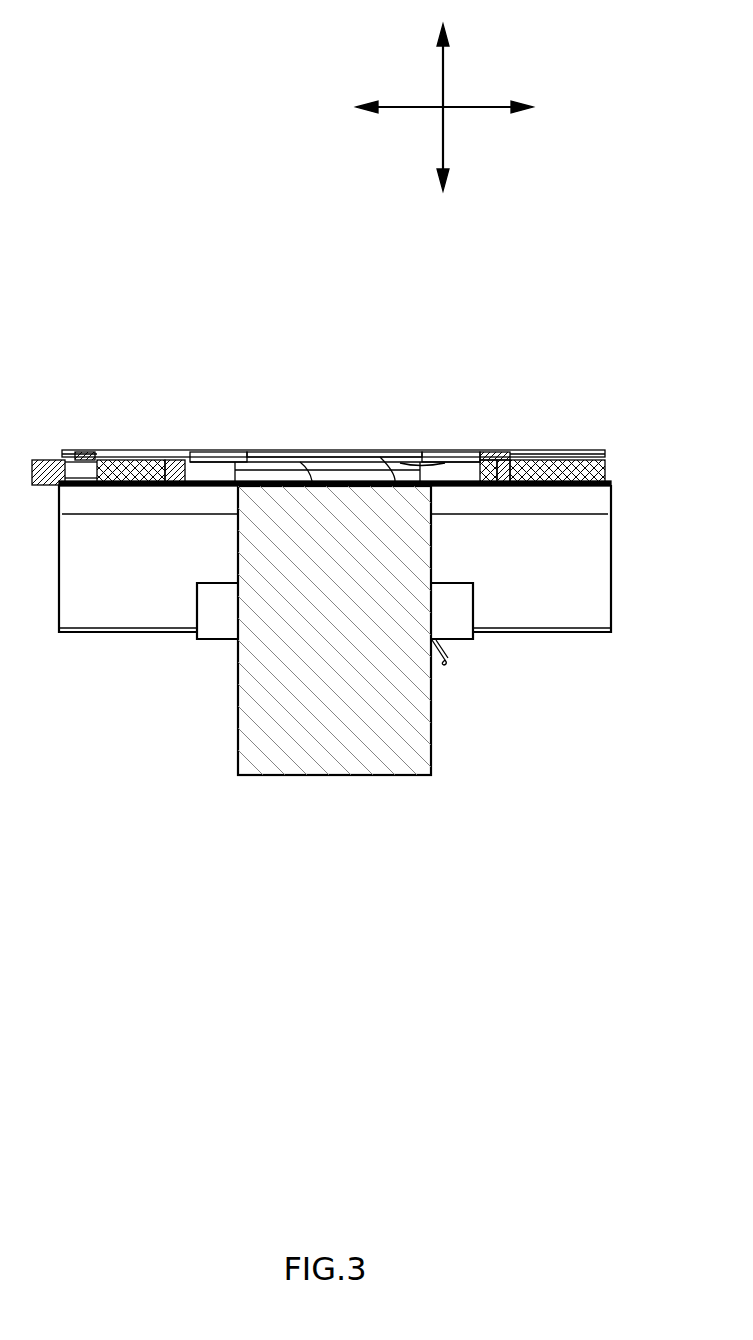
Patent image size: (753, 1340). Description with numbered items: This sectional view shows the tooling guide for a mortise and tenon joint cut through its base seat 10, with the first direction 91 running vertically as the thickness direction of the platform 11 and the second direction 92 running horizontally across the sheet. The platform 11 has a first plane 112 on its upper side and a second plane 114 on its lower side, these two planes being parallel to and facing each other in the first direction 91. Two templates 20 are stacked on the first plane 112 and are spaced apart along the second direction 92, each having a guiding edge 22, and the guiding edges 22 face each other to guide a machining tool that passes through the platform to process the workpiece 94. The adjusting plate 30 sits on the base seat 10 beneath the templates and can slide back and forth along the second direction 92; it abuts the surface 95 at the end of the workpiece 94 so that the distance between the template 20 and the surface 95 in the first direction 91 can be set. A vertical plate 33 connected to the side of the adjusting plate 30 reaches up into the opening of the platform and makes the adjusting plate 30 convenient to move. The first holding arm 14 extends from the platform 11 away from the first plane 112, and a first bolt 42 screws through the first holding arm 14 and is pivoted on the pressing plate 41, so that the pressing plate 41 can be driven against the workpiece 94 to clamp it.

The base seat 10 is at (592, 633).
The platform 11 is at (608, 470).
The first holding arm 14 is at (611, 580).
The template 20 is at (218, 450).
The guiding edge 22 is at (255, 452).
The adjusting plate 30 is at (233, 460).
The vertical plate 33 is at (380, 455).
The pressing plate 41 is at (473, 611).
The first bolt 42 is at (446, 662).
The first direction 91 is at (443, 78).
The second direction 92 is at (472, 107).
The workpiece 94 is at (334, 775).
The surface 95 is at (312, 462).
The first plane 112 is at (472, 458).
The second plane 114 is at (448, 458).